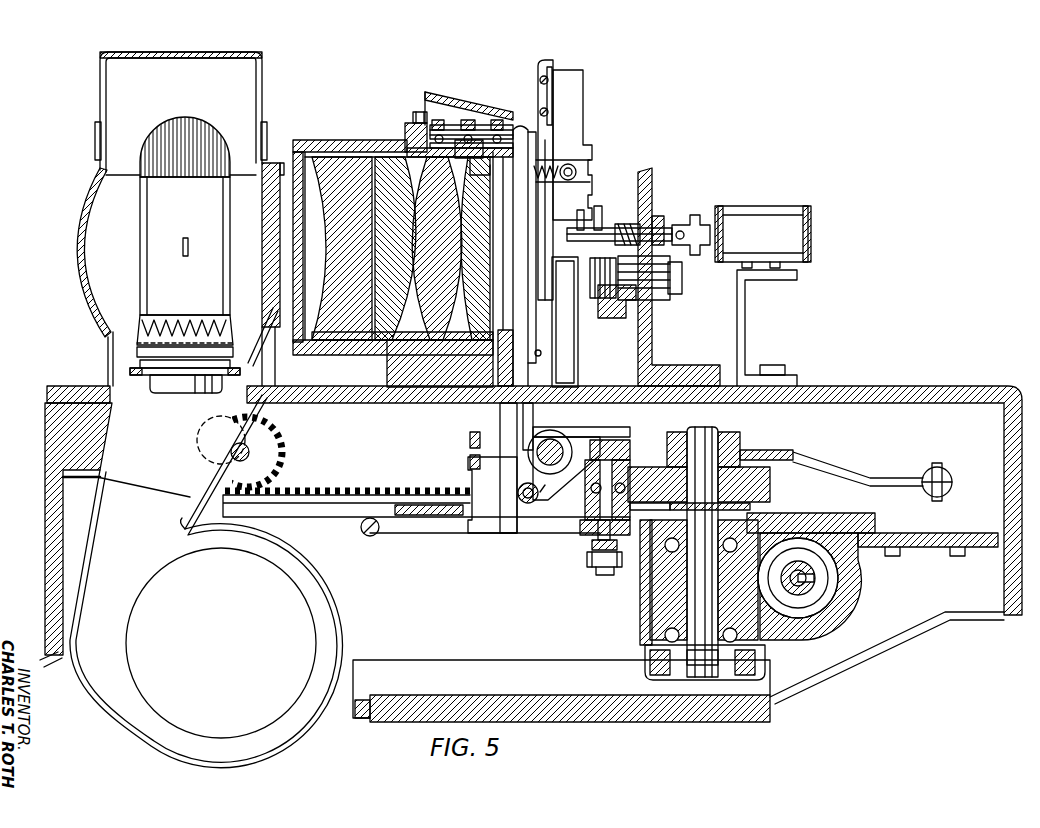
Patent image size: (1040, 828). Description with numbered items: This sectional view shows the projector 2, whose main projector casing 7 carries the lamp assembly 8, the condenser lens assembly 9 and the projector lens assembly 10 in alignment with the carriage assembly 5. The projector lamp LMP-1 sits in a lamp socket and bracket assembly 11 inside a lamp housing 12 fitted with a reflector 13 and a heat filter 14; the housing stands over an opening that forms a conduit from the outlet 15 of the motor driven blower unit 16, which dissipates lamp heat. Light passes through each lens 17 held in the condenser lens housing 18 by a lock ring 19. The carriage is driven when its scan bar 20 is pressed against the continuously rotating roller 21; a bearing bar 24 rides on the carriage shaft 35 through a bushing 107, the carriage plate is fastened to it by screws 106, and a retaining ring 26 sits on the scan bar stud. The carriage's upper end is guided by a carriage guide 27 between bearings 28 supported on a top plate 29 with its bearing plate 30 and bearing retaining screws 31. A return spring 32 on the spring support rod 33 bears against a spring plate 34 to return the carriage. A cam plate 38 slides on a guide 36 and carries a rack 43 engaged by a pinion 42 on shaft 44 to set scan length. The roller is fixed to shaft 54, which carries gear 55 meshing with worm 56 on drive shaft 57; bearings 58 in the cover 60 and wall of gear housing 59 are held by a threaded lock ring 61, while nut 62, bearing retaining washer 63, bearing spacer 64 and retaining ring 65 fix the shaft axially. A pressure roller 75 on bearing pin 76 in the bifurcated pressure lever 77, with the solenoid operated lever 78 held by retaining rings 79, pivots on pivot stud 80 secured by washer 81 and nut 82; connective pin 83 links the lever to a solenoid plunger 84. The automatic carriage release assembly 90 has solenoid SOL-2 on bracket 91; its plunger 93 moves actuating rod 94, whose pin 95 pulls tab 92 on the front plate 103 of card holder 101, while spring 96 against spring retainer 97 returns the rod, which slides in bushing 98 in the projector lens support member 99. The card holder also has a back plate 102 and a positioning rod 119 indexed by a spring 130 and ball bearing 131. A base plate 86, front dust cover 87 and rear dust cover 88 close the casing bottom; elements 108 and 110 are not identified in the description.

The projector 2 is at (340, 72).
The carriage assembly 5 is at (564, 56).
The main projector casing 7 is at (46, 452).
The lamp assembly 8 is at (88, 86).
The condenser lens assembly 9 is at (367, 364).
The projector lens assembly 10 is at (685, 292).
The lamp socket and bracket assembly 11 is at (228, 336).
The lamp housing 12 is at (205, 52).
The reflector 13 is at (68, 276).
The heat filter 14 is at (268, 337).
The outlet 15 is at (86, 528).
The motor driven blower unit 16 is at (334, 590).
The condenser lens 17 is at (330, 186).
The condenser lens housing 18 is at (300, 142).
The lock ring 19 is at (292, 146).
The scan bar 20 is at (650, 505).
The roller 21 is at (778, 480).
The bearing bar 24 is at (592, 428).
The retaining ring 26 is at (471, 120).
The carriage guide 27 is at (468, 172).
The bearings 28 is at (468, 152).
The top plate 29 is at (404, 134).
The bearing plate 30 is at (414, 118).
The bearing retaining screws 31 is at (478, 108).
The return spring 32 is at (515, 494).
The spring support rod 33 is at (528, 483).
The spring plate 34 is at (553, 493).
The carriage shaft 35 is at (540, 442).
The guide 36 is at (408, 538).
The cam plate 38 is at (408, 510).
The pinion 42 is at (264, 426).
The rack 43 is at (322, 488).
The shaft 44 is at (248, 450).
The shaft 54 is at (708, 427).
The gear 55 is at (782, 596).
The worm 56 is at (812, 554).
The drive shaft 57 is at (790, 604).
The bearings 58 is at (718, 546).
The gear housing 59 is at (860, 578).
The cover 60 is at (836, 514).
The threaded lock ring 61 is at (672, 675).
The nut 62 is at (726, 675).
The bearing retaining washer 63 is at (645, 648).
The bearing spacer 64 is at (752, 508).
The retaining ring 65 is at (744, 467).
The pressure roller 75 is at (657, 467).
The bearing pin 76 is at (620, 440).
The bifurcated pressure lever 77 is at (618, 460).
The solenoid operated lever 78 is at (832, 462).
The retaining rings 79 is at (608, 440).
The pivot stud 80 is at (590, 545).
The washer 81 is at (586, 560).
The nut 82 is at (594, 578).
The connective pin 83 is at (944, 466).
The plunger 84 is at (948, 484).
The base plate 86 is at (620, 722).
The front dust cover 87 is at (896, 636).
The rear dust cover 88 is at (345, 718).
The automatic carriage release assembly 90 is at (686, 201).
The bracket 91 is at (740, 334).
The tab 92 is at (584, 146).
The solenoid plunger 93 is at (691, 245).
The actuating rod 94 is at (600, 242).
The pin 95 is at (576, 214).
The spring 96 is at (626, 224).
The spring retainer 97 is at (602, 216).
The bushing 98 is at (658, 216).
The projector lens support member 99 is at (653, 346).
The card holder 101 is at (536, 122).
The back plate 102 is at (528, 128).
The front plate 103 is at (540, 86).
The screws 106 is at (486, 450).
The bushing 107 is at (556, 438).
The lens seat 108 is at (404, 163).
The guide 110 is at (540, 352).
The positioning rod 119 is at (577, 172).
The spring 130 is at (540, 176).
The ball bearing 131 is at (560, 160).
The projector lamp LMP-1 is at (186, 120).
The solenoid SOL-2 is at (777, 206).